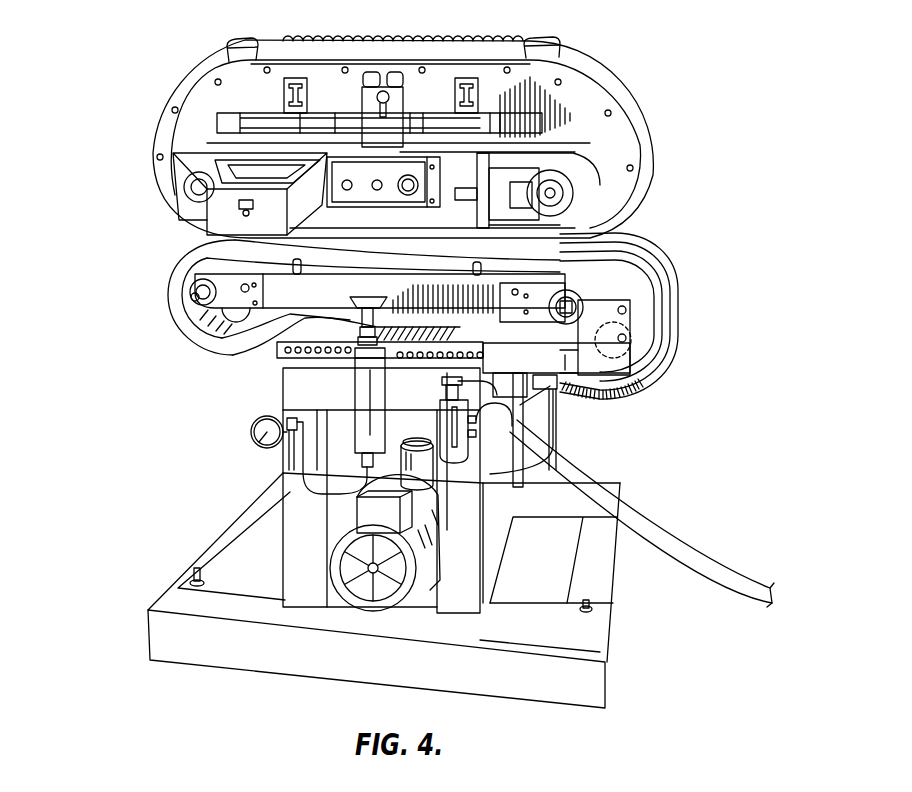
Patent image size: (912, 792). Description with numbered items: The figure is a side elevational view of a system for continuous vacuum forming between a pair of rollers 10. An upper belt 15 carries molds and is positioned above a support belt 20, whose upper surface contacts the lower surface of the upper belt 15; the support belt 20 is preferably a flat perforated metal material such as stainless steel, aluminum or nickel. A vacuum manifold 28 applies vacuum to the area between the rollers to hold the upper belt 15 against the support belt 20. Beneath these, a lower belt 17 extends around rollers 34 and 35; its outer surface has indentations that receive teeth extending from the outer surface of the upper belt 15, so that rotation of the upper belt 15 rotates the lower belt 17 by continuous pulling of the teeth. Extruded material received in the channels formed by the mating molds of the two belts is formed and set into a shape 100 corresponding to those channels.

The pair of rollers 10 is at (121, 30).
The upper belt 15 is at (641, 110).
The vacuum manifold 28 is at (457, 180).
The support belt 20 is at (555, 275).
The roller 34 is at (203, 336).
The roller 35 is at (617, 335).
The shape 100 is at (668, 365).
The lower belt 17 is at (650, 380).